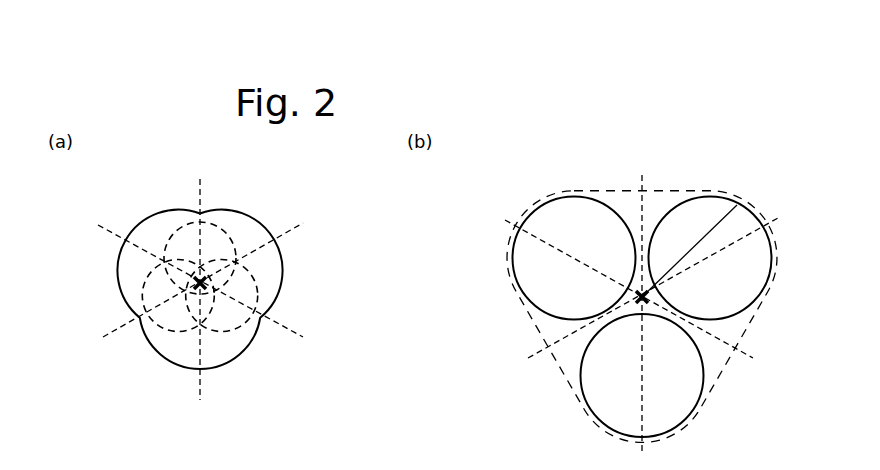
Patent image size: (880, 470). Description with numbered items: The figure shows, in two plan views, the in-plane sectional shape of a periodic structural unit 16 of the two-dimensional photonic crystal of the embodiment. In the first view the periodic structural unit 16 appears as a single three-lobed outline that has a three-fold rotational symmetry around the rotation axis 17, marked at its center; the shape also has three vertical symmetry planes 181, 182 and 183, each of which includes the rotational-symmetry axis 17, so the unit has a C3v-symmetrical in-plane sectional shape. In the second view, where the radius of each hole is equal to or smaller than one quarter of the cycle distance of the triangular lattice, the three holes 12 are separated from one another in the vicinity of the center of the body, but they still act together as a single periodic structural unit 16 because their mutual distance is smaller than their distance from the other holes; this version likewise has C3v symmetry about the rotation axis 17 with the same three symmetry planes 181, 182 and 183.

The hole 12 is at (512, 253).
The periodic structural unit 16 is at (223, 210).
The rotation axis 17 is at (204, 279).
The vertical symmetry plane 181 is at (197, 202).
The vertical symmetry plane 182 is at (120, 237).
The vertical symmetry plane 183 is at (125, 325).